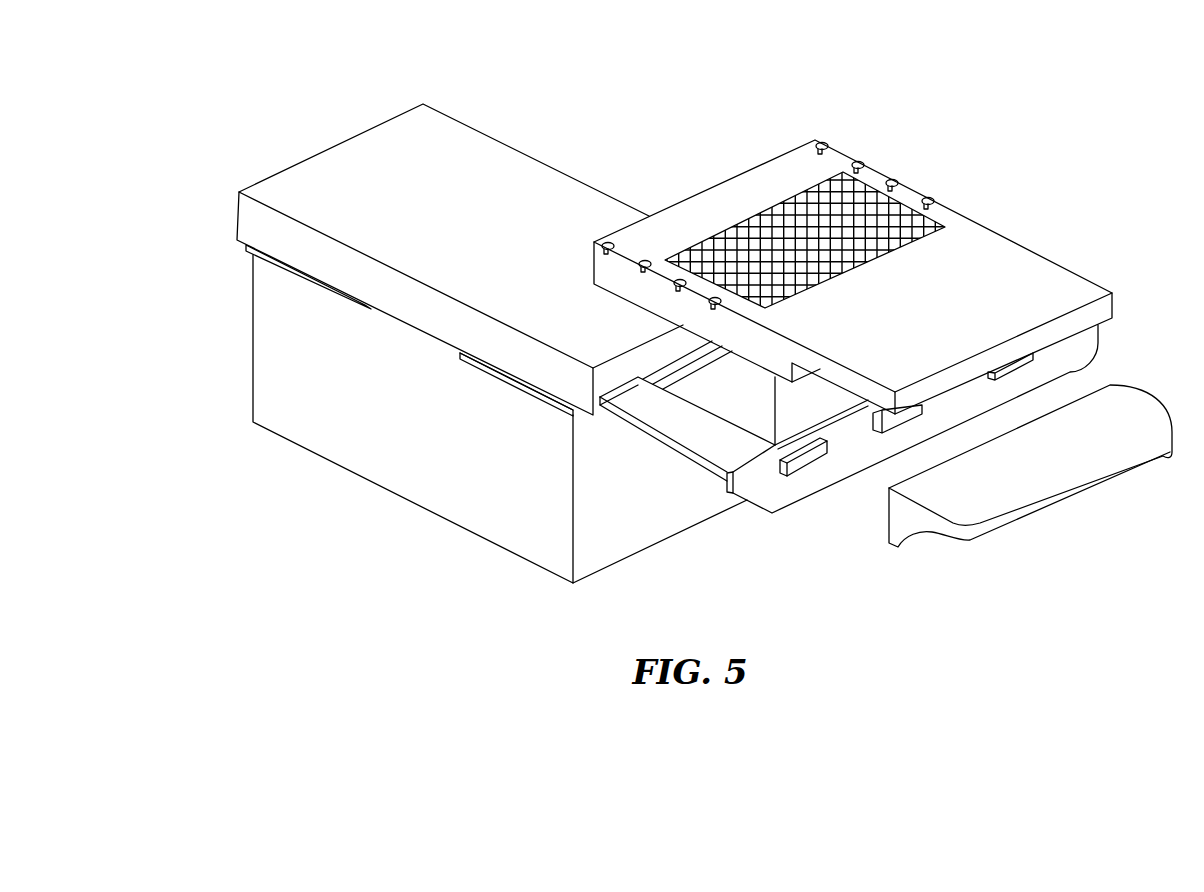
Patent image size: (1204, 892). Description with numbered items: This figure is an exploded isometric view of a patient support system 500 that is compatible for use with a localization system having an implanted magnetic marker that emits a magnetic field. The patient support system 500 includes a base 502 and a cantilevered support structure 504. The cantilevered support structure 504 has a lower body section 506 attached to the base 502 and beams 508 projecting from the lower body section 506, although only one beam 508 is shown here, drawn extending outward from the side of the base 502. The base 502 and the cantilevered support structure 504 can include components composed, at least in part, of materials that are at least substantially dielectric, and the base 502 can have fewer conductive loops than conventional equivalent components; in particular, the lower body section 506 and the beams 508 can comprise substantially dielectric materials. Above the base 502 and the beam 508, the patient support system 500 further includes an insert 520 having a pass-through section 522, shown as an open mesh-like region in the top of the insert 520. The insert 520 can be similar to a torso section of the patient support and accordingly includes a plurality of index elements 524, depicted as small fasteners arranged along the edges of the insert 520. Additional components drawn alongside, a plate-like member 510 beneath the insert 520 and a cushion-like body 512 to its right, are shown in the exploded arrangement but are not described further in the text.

The patient support system 500 is at (589, 103).
The base 502 is at (607, 552).
The cantilevered support structure 504 is at (567, 385).
The lower body section 506 is at (412, 303).
The beam 508 is at (668, 434).
The drawer plate 510 is at (795, 487).
The cushion 512 is at (1030, 506).
The insert 520 is at (1072, 284).
The pass-through section 522 is at (902, 196).
The index elements 524 is at (823, 149).